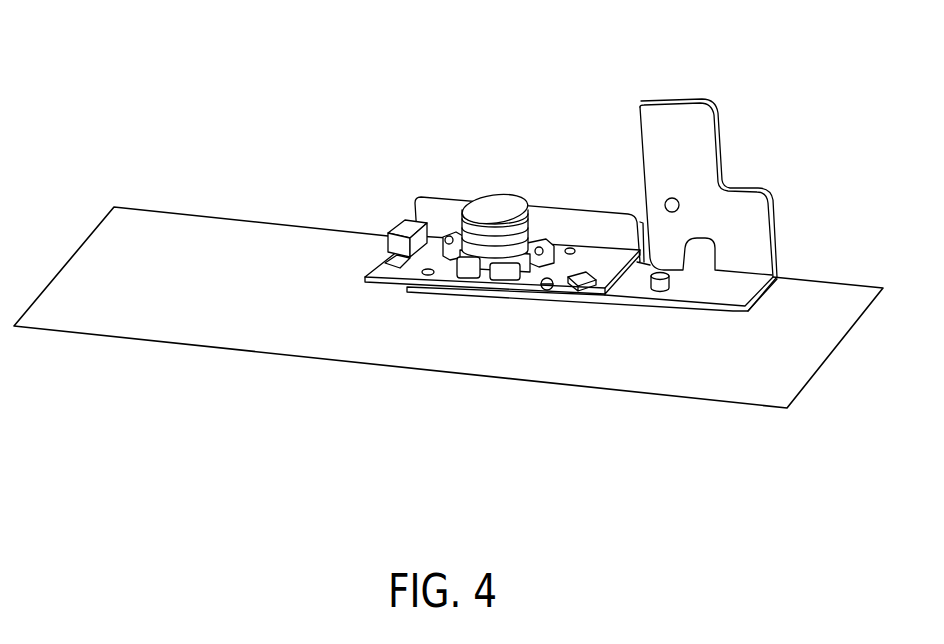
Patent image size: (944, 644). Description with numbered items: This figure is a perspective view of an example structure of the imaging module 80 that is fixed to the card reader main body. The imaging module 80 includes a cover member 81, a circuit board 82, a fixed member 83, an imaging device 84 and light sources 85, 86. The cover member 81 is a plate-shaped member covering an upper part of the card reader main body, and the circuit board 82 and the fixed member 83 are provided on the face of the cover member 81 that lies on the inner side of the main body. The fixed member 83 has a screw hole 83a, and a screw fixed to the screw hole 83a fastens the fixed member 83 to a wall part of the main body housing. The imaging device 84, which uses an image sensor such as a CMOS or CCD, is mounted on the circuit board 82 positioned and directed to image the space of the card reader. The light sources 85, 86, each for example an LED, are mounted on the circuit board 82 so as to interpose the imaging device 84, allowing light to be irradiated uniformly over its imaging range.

The imaging module 80 is at (448, 242).
The cover member 81 is at (195, 295).
The circuit board 82 is at (597, 255).
The fixed member 83 is at (607, 164).
The screw hole 83a is at (678, 200).
The imaging device 84 is at (493, 200).
The light source 85 is at (400, 262).
The light source 86 is at (587, 288).